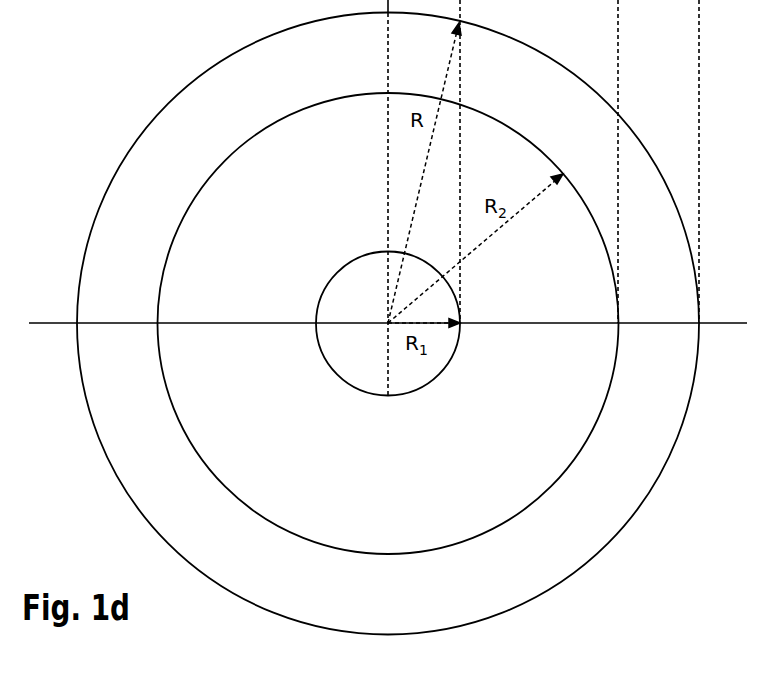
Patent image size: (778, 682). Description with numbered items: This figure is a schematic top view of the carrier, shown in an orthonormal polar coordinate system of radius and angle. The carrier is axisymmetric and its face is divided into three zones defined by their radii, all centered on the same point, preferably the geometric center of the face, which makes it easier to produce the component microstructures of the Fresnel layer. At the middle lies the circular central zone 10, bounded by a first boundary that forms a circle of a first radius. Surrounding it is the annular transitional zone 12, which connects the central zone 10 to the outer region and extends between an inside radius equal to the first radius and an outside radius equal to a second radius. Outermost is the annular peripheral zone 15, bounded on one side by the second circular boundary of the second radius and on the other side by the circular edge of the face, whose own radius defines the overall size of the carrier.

The central zone 10 is at (338, 327).
The transitional zone 12 is at (270, 184).
The peripheral zone 15 is at (225, 110).